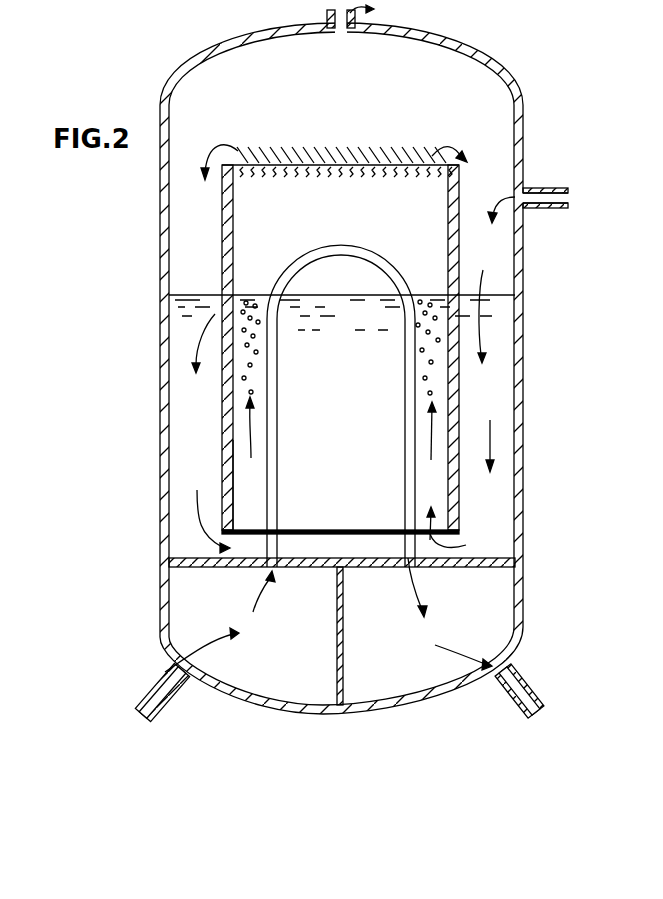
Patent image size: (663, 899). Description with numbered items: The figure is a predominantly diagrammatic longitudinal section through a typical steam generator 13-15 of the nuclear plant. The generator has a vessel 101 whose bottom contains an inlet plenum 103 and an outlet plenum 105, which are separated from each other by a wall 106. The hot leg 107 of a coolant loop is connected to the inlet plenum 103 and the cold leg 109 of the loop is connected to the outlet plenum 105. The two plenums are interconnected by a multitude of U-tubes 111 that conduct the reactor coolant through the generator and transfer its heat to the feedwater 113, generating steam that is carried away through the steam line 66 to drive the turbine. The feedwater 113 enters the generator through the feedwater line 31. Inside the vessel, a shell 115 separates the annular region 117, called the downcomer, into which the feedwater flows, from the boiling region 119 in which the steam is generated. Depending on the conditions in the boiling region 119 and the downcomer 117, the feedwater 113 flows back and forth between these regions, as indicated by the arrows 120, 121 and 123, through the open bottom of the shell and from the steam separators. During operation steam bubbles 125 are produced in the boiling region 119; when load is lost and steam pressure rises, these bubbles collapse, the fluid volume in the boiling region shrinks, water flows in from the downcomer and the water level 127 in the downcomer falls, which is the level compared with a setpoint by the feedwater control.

The steam line 66 is at (327, 16).
The feedwater line 31 is at (538, 190).
The vessel 101 is at (577, 431).
The inlet plenum 103 is at (175, 597).
The outlet plenum 105 is at (505, 592).
The wall 106 is at (343, 688).
The hot leg 107 is at (157, 688).
The cold leg 109 is at (524, 693).
The U-tubes 111 is at (277, 476).
The feedwater 113 is at (505, 362).
The shell 115 is at (228, 251).
The annular region (downcomer) 117 is at (480, 384).
The boiling region 119 is at (243, 476).
The arrow 120 is at (196, 522).
The arrow 121 is at (437, 557).
The arrow 123 is at (441, 150).
The steam bubbles 125 is at (250, 340).
The level 127 is at (498, 297).
The steam generator 13-15 is at (132, 427).